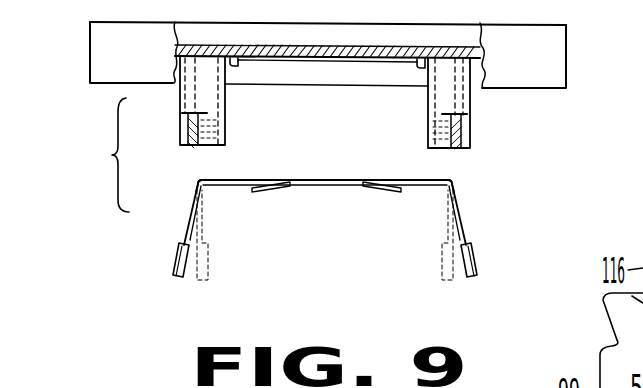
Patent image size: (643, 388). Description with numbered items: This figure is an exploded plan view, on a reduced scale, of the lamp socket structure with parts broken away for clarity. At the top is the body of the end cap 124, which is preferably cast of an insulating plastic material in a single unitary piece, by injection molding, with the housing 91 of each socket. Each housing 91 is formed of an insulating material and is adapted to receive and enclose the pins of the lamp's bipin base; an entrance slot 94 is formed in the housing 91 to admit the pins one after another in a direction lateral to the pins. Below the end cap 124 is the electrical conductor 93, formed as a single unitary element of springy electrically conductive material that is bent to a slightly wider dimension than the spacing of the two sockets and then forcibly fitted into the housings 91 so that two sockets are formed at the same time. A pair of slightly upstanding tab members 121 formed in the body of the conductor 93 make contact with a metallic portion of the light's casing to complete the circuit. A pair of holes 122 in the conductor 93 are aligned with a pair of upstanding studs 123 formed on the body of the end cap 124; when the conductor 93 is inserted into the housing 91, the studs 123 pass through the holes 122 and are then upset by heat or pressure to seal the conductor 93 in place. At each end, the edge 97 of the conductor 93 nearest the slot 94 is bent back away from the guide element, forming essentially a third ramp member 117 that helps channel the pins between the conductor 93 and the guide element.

The end cap 124 is at (562, 72).
The upstanding studs 123 is at (238, 65).
The housing 91 is at (190, 93).
The entrance slot 94 is at (195, 146).
The electrical conductor 93 is at (186, 236).
The holes 122 is at (237, 179).
The upstanding tab members 121 is at (373, 189).
The edge of the conductor 97 is at (187, 267).
The third ramp member 117 is at (463, 277).